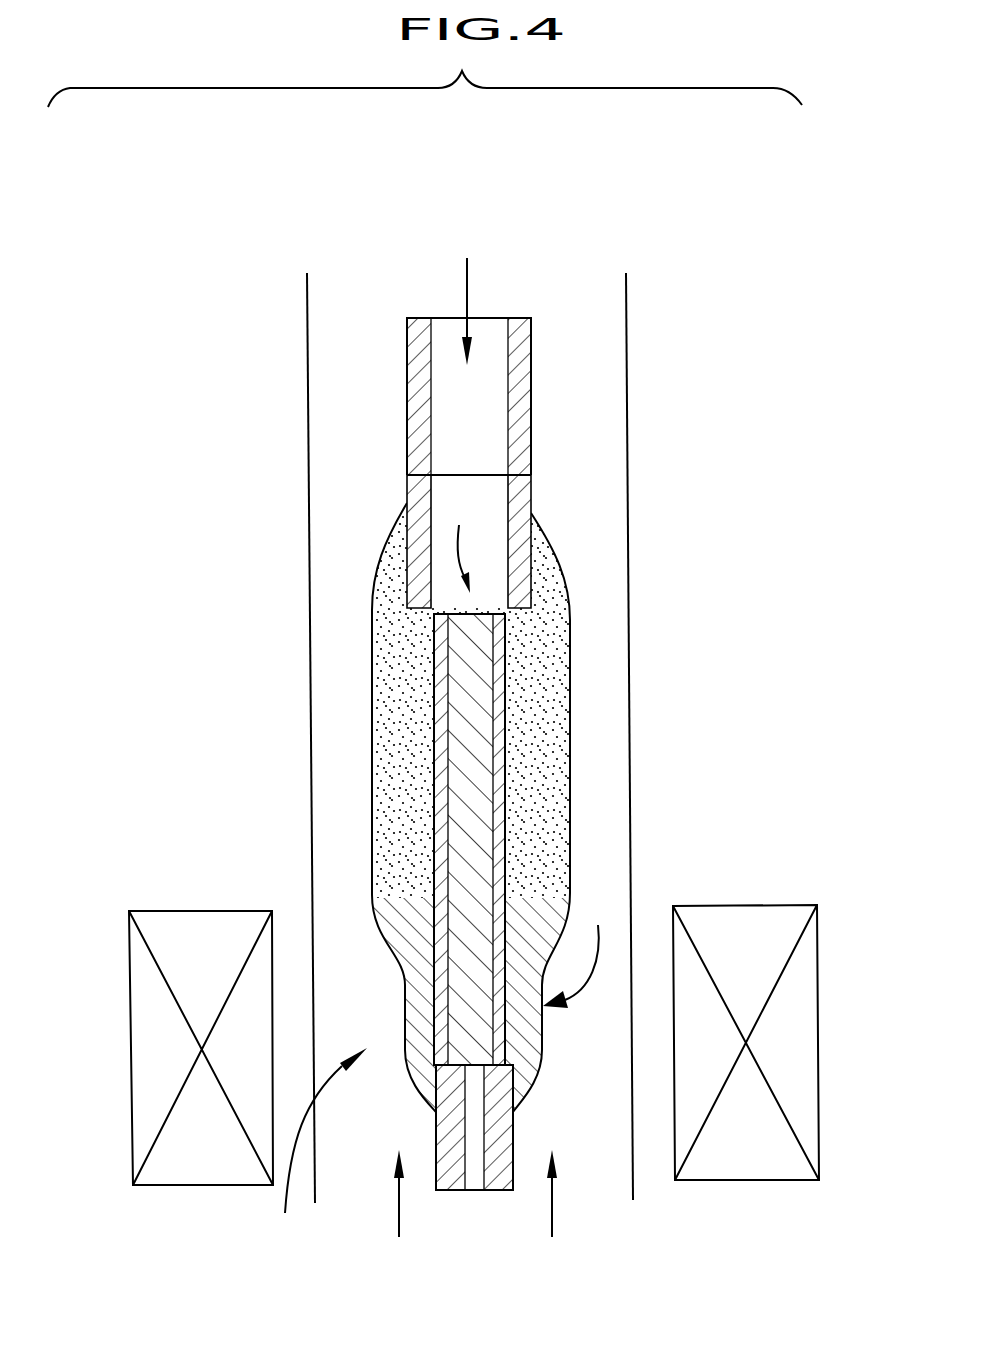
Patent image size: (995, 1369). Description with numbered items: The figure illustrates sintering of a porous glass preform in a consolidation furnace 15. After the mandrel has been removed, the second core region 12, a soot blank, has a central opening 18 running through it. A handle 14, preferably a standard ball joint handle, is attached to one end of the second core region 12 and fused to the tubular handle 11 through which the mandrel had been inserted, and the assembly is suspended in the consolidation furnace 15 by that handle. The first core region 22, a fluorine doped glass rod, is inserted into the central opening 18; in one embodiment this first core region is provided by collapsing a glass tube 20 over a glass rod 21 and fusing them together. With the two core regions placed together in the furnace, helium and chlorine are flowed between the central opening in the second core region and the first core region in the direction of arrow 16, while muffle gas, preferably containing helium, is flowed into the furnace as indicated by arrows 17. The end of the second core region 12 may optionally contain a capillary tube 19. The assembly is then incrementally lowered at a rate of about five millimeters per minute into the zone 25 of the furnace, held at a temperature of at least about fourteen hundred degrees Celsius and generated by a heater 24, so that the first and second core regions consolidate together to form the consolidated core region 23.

The tubular handle 11 is at (522, 522).
The second core region 12 is at (555, 781).
The handle 14 is at (407, 410).
The consolidation furnace 15 is at (631, 500).
The arrow 16 is at (467, 285).
The arrows 17 is at (552, 1202).
The central opening 18 is at (507, 887).
The capillary tube 19 is at (493, 1160).
The glass tube 20 is at (500, 727).
The glass rod 21 is at (482, 680).
The first core region 22 is at (463, 538).
The consolidated core region 23 is at (582, 944).
The heater 24 is at (818, 1010).
The zone 25 is at (316, 1152).